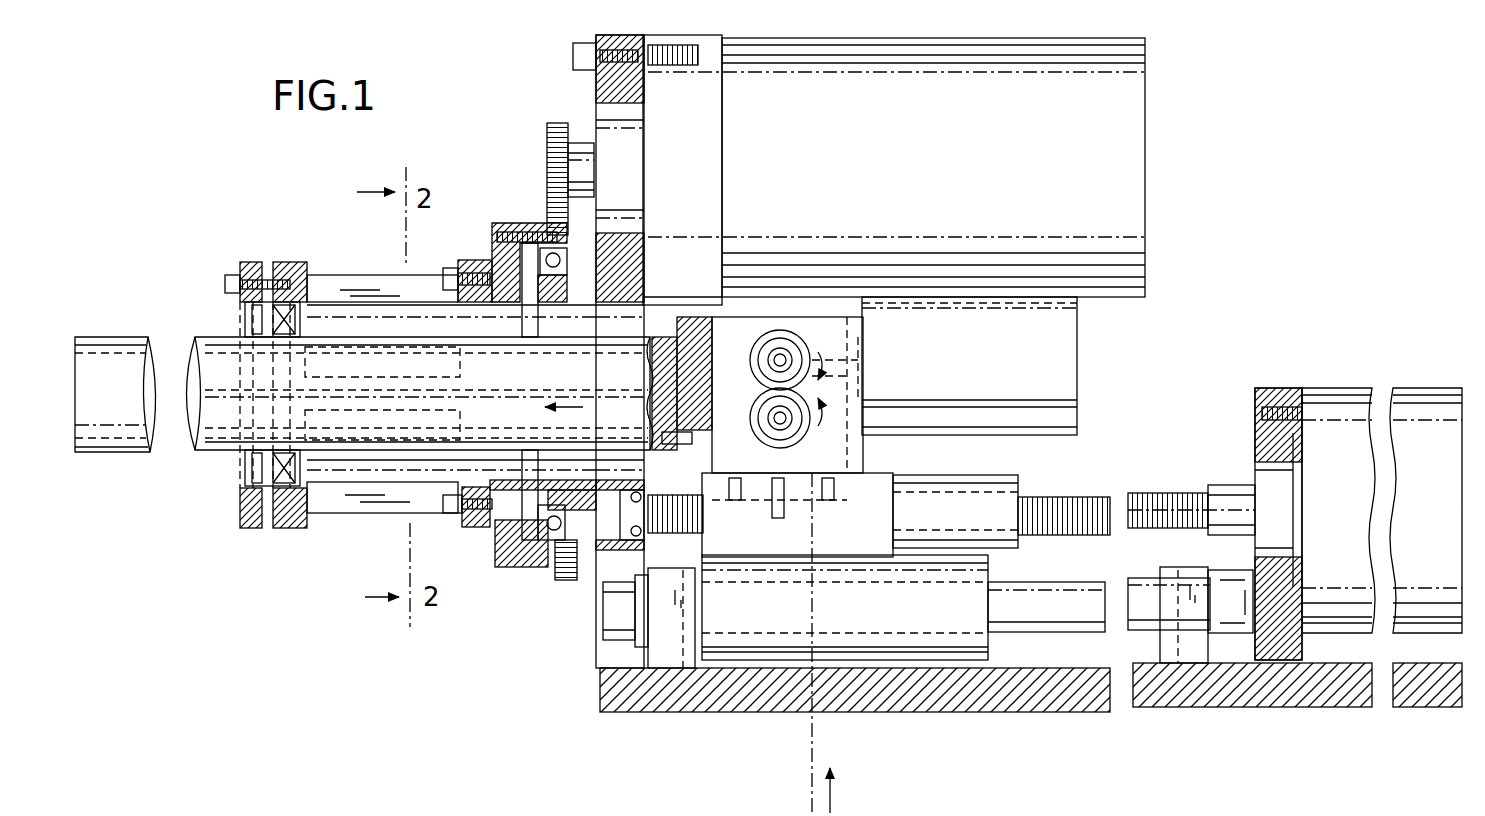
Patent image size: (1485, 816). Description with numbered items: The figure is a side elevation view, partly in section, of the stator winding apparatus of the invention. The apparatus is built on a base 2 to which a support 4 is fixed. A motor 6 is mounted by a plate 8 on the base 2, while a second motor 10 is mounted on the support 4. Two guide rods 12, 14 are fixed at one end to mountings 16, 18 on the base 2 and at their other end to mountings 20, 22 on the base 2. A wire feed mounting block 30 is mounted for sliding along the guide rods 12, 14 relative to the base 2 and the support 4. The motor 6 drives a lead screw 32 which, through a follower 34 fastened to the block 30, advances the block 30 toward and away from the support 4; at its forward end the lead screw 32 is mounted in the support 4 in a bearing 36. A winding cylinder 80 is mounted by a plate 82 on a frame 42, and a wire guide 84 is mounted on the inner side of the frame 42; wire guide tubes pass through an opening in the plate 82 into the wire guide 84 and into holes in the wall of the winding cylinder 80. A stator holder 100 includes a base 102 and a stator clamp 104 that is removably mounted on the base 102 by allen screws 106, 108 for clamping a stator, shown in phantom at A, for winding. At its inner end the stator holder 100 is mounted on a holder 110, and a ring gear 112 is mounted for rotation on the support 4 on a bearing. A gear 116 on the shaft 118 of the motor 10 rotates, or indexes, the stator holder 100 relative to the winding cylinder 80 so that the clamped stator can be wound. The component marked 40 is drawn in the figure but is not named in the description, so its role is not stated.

The base 2 is at (958, 700).
The support 4 is at (600, 92).
The motor 6 is at (1431, 515).
The plate 8 is at (1257, 437).
The motor 10 is at (940, 153).
The guide rod 12 is at (1000, 633).
The guide rod 14 is at (1063, 633).
The mounting 16 is at (668, 650).
The mounting 18 is at (683, 668).
The mounting 20 is at (1198, 655).
The mounting 22 is at (1178, 663).
The wire feed mounting block 30 is at (910, 618).
The lead screw 32 is at (1112, 495).
The follower 34 is at (1005, 488).
The bearing 36 is at (622, 536).
The housing 40 is at (985, 365).
The frame 42 is at (855, 448).
The winding cylinder 80 is at (541, 382).
The plate 82 is at (652, 368).
The wire guide 84 is at (730, 400).
The stator holder 100 is at (358, 266).
The base 102 is at (425, 278).
The stator clamp 104 is at (252, 262).
The allen screw 106 is at (228, 280).
The allen screw 108 is at (455, 514).
The holder 110 is at (518, 228).
The ring gear 112 is at (560, 578).
The gear 116 is at (552, 145).
The shaft 118 is at (627, 168).
The stator A is at (245, 315).